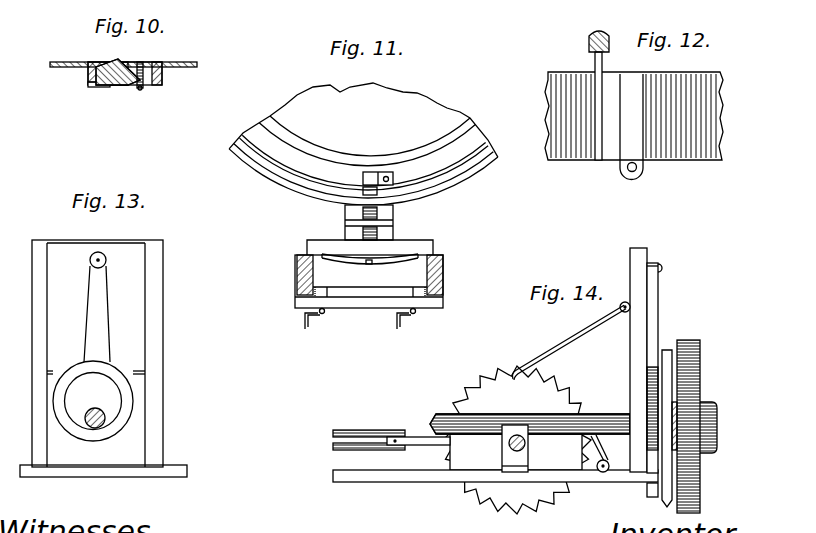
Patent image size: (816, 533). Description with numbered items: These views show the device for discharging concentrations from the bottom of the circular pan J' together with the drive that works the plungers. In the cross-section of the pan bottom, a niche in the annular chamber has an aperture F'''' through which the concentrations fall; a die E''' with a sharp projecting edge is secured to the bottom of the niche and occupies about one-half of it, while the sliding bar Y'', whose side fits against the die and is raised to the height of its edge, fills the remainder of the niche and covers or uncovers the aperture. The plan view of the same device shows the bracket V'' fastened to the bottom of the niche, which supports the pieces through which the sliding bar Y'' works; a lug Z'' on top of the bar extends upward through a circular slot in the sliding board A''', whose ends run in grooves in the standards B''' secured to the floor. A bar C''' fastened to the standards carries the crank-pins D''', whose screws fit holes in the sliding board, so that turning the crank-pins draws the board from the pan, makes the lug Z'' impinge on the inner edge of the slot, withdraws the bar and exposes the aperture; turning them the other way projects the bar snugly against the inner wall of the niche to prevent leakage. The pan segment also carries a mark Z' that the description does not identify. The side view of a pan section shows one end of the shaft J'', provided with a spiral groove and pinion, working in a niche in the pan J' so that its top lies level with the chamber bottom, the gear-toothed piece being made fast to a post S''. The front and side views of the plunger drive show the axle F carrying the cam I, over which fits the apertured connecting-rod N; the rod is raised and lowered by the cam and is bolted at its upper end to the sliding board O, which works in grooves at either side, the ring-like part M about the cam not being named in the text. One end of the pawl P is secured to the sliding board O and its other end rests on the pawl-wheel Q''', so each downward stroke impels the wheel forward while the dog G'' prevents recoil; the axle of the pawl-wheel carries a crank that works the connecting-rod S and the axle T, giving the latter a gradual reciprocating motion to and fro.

In FIG. 10, the pan J' is at (123, 57).
In FIG. 11, the pan J' is at (363, 144).
In FIG. 12, the pan J' is at (634, 116).
In FIG. 10, the sliding bar Y'' is at (117, 63).
In FIG. 11, the sliding bar Y'' is at (378, 172).
In FIG. 10, the die E''' is at (144, 65).
In FIG. 11, the die E''' is at (401, 171).
In FIG. 10, the aperture F'''' is at (125, 80).
In FIG. 11, the segment edge Z' is at (491, 175).
In FIG. 11, the bracket V'' is at (357, 221).
In FIG. 11, the sliding board A''' is at (365, 271).
In FIG. 11, the standards B''' is at (370, 275).
In FIG. 11, the lug Z'' is at (370, 270).
In FIG. 11, the bar C''' is at (370, 293).
In FIG. 11, the crank-pins D''' is at (368, 322).
In FIG. 12, the post S'' is at (608, 94).
In FIG. 12, the shaft J'' is at (642, 127).
In FIG. 13, the sliding board O is at (110, 271).
In FIG. 14, the sliding board O is at (630, 273).
In FIG. 13, the connecting-rod N is at (97, 314).
In FIG. 14, the connecting-rod N is at (652, 372).
In FIG. 13, the ring / gear bar M is at (93, 399).
In FIG. 14, the ring / gear bar M is at (638, 383).
In FIG. 13, the cam I is at (93, 401).
In FIG. 13, the axle F is at (97, 412).
In FIG. 14, the axle F is at (495, 438).
In FIG. 14, the pawl P is at (569, 342).
In FIG. 14, the pawl-wheel Q''' is at (517, 440).
In FIG. 14, the axle T is at (391, 430).
In FIG. 14, the connecting-rod S is at (521, 442).
In FIG. 14, the dog G'' is at (607, 453).